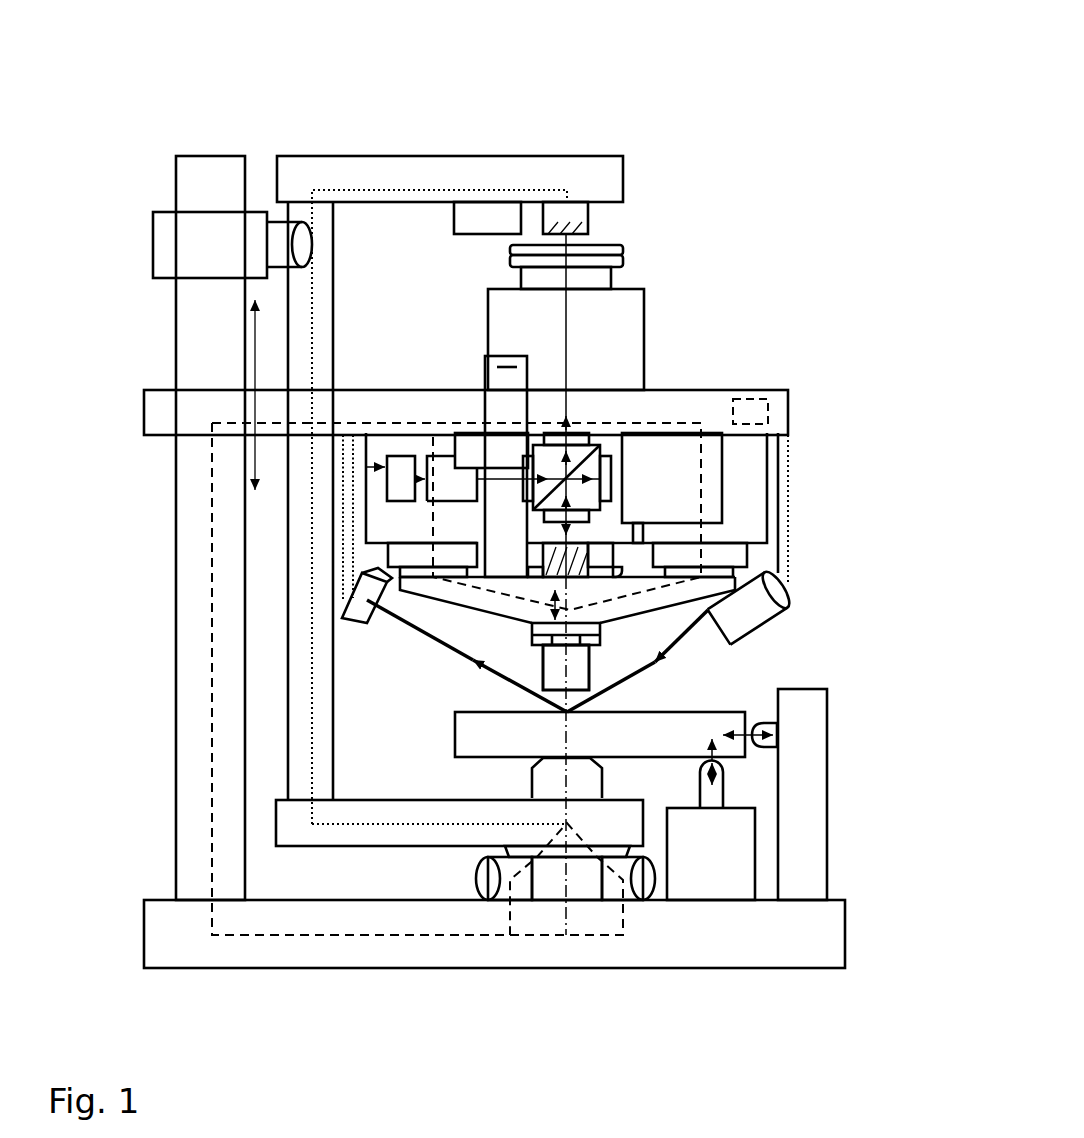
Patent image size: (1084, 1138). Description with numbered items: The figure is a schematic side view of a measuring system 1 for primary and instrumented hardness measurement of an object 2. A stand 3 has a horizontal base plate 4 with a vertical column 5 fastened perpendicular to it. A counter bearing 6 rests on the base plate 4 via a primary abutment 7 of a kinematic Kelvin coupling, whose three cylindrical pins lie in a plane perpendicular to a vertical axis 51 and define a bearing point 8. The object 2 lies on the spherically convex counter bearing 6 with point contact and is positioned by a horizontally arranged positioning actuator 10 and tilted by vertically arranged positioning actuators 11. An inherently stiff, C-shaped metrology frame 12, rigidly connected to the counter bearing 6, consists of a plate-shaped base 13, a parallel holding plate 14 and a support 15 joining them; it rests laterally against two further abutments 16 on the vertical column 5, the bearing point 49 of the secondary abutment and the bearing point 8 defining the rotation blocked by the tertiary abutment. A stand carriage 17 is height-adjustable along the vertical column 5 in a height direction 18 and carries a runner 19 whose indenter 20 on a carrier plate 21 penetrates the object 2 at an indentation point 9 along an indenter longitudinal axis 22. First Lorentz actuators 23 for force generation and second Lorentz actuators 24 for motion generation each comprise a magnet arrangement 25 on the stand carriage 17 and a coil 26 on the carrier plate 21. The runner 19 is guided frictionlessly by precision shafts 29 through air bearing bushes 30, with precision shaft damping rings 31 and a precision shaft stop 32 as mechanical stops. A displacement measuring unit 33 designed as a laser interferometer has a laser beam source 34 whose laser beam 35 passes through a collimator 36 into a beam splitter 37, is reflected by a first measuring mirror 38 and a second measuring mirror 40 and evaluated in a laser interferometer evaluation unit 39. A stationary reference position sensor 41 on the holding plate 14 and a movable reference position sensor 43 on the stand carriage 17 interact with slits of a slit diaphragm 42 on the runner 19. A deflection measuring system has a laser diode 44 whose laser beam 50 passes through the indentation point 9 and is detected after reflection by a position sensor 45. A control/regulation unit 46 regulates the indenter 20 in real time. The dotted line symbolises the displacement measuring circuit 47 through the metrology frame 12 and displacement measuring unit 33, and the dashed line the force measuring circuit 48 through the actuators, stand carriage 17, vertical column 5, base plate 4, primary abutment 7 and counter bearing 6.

The measuring system 1 is at (735, 122).
The object 2 is at (733, 749).
The stand 3 is at (850, 923).
The base plate 4 is at (482, 957).
The vertical column 5 is at (188, 876).
The counter bearing 6 is at (592, 786).
The primary abutment 7 is at (490, 890).
The bearing point 8 is at (567, 823).
The indentation point 9 is at (563, 712).
The horizontally arranged positioning actuator 10 is at (813, 848).
The vertically arranged positioning actuator 11 is at (720, 888).
The metrology frame 12 is at (613, 151).
The base 13 is at (345, 837).
The holding plate 14 is at (290, 162).
The support 15 is at (298, 792).
The further abutments 16 is at (297, 252).
The stand carriage 17 is at (158, 411).
The height direction 18 is at (252, 333).
The runner 19 is at (828, 489).
The indenter 20 is at (588, 676).
The carrier plate 21 is at (652, 622).
The indenter longitudinal axis 22 is at (586, 677).
The first Lorentz actuator 23 is at (777, 451).
The second Lorentz actuator 24 is at (363, 508).
The magnet arrangement 25 is at (397, 555).
The coil 26 is at (352, 581).
The precision shaft 29 is at (603, 273).
The air bearing bush 30 is at (637, 333).
The precision shaft damping ring 31 is at (612, 262).
The precision shaft stop 32 is at (612, 250).
The displacement measuring unit 33 is at (395, 490).
The laser beam source 34 is at (377, 527).
The laser beam 35 is at (422, 477).
The collimator 36 is at (440, 467).
The beam splitter 37 is at (590, 492).
The first measuring mirror 38 is at (557, 567).
The laser interferometer evaluation unit 39 is at (713, 512).
The second measuring mirror 40 is at (582, 208).
The stationary reference position sensor 41 is at (490, 210).
The slit diaphragm 42 is at (515, 377).
The movable reference position sensor 43 is at (463, 443).
The laser diode 44 is at (780, 592).
The position sensor 45 is at (367, 592).
The control/regulation unit 46 is at (768, 410).
The displacement measuring circuit 47 is at (528, 190).
The force measuring circuit 48 is at (228, 425).
The bearing point 49 is at (300, 239).
The laser beam 50 is at (530, 617).
The vertical axis 51 is at (746, 680).